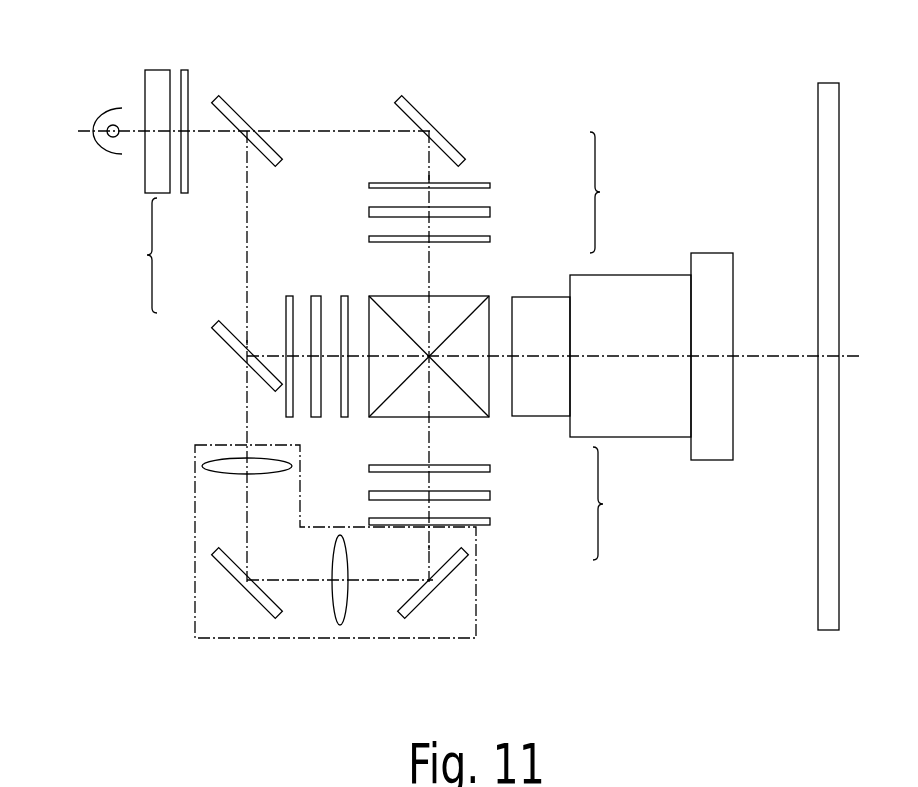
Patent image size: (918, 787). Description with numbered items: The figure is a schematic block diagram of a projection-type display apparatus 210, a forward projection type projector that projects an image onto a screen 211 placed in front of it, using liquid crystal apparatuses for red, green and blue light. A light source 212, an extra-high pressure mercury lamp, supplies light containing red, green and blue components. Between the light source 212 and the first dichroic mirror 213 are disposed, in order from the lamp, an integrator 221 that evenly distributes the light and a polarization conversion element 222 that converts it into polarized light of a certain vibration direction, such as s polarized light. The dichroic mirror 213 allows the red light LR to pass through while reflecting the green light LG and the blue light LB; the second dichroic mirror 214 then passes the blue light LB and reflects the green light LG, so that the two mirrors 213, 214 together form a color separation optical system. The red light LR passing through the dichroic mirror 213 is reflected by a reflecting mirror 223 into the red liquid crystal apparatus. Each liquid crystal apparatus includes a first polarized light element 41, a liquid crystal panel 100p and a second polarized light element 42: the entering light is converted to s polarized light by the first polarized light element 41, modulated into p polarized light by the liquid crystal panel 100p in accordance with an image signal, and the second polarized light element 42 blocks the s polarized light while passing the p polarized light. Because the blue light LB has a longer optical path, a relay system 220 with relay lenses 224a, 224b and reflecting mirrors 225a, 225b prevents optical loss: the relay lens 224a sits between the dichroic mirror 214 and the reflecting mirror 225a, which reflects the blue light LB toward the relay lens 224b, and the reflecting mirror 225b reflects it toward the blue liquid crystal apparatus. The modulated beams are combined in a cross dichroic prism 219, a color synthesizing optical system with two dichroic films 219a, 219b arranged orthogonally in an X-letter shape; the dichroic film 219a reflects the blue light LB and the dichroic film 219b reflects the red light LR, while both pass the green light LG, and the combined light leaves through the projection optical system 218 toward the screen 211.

The projection-type display apparatus 210 is at (666, 106).
The screen 211 is at (840, 92).
The light source 212 is at (120, 108).
The dichroic mirror 213 is at (237, 106).
The dichroic mirror 214 is at (228, 353).
The projection optical system 218 is at (712, 453).
The cross dichroic prism 219 is at (405, 302).
The dichroic film 219a is at (468, 317).
The dichroic film 219b is at (470, 400).
The relay system 220 is at (478, 618).
The integrator 221 is at (145, 78).
The polarization conversion element 222 is at (188, 76).
The reflecting mirror 223 is at (417, 110).
The relay lens 224a is at (225, 461).
The relay lens 224b is at (352, 595).
The reflecting mirror 225a is at (228, 581).
The reflecting mirror 225b is at (455, 572).
The first polarized light element 41 is at (490, 185).
The second polarized light element 42 is at (490, 239).
The liquid crystal panel 100p is at (490, 212).
The red light LR is at (428, 172).
The green light LG is at (265, 325).
The blue light LB is at (427, 540).